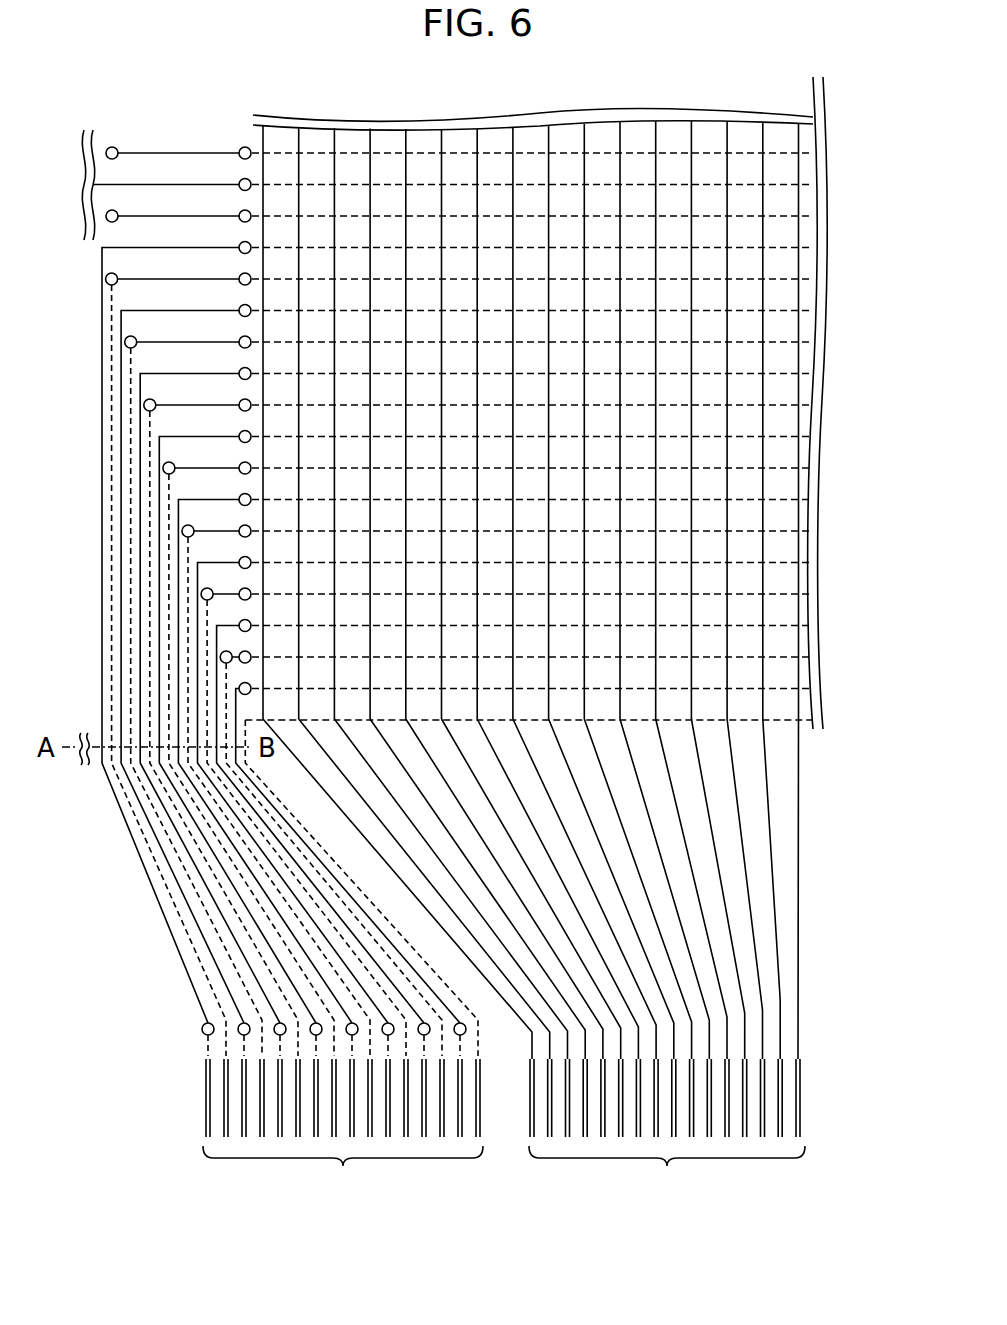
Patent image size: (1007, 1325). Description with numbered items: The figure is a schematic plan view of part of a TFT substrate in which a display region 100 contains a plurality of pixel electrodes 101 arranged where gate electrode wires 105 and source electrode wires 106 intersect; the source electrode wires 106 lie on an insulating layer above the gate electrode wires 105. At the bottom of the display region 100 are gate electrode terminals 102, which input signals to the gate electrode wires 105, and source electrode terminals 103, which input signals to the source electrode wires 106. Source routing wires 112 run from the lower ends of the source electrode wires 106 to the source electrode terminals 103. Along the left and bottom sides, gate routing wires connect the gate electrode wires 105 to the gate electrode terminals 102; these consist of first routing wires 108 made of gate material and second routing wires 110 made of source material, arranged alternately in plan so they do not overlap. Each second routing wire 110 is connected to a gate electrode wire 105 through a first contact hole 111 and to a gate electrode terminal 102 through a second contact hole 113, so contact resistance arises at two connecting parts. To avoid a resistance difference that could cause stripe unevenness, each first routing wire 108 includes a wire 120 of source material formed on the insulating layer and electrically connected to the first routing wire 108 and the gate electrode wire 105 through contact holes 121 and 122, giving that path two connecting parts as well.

The display region 100 is at (778, 445).
The pixel electrode 101 is at (783, 580).
The gate electrode terminal 102 is at (343, 1131).
The source electrode terminal 103 is at (667, 1131).
The gate electrode wire 105 is at (803, 722).
The source electrode wire 106 is at (800, 482).
The first routing wire 108 is at (102, 672).
The second routing wire 110 is at (102, 614).
The first contact hole 111 is at (243, 253).
The source routing wire 112 is at (800, 787).
The second contact hole 113 is at (202, 1029).
The wire 120 is at (163, 340).
The contact hole 121 is at (124, 342).
The contact hole 122 is at (243, 349).